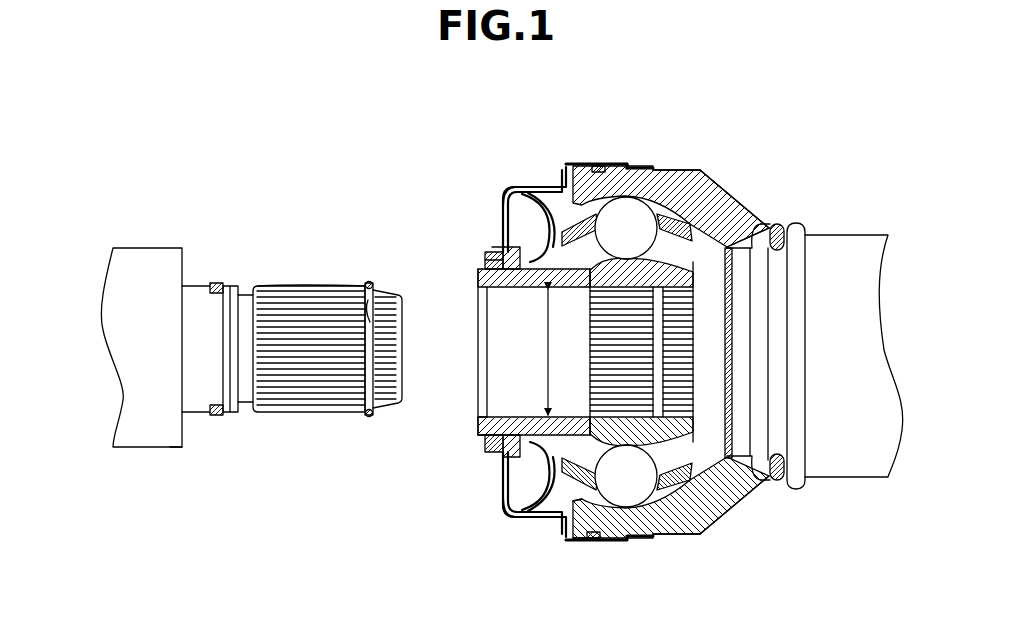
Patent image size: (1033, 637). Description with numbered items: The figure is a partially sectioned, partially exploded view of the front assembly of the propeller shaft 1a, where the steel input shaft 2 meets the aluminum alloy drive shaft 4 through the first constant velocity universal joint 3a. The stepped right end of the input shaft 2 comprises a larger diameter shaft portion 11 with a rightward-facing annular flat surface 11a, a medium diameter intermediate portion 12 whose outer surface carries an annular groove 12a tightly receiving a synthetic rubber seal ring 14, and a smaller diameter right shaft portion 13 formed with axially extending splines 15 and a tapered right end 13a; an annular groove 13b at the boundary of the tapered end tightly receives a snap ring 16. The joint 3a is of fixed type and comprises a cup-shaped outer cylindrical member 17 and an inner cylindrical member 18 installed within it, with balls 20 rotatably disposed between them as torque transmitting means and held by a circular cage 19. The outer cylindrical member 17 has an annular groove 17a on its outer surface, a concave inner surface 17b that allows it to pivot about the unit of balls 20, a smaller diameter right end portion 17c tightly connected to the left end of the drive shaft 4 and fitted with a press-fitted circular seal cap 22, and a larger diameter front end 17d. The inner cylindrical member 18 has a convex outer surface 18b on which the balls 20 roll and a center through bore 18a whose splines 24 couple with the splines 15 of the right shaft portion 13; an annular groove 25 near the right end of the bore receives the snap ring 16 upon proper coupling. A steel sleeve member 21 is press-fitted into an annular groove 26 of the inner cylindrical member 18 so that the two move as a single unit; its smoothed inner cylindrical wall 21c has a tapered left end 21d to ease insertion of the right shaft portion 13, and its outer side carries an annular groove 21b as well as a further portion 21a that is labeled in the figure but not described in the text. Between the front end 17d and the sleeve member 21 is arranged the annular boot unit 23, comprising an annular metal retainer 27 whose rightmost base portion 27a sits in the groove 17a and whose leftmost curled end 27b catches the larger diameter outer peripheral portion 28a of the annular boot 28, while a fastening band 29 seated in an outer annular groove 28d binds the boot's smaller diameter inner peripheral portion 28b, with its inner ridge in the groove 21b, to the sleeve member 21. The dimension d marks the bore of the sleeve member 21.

The propeller shaft 1a is at (772, 134).
The input shaft 2 is at (112, 330).
The first constant velocity universal joint 3a is at (700, 170).
The drive shaft 4 is at (851, 458).
The larger diameter shaft portion 11 is at (152, 258).
The annular flat surface 11a is at (183, 441).
The medium diameter intermediate portion 12 is at (193, 414).
The annular groove 12a is at (221, 350).
The smaller diameter right shaft portion 13 is at (272, 377).
The tapered right end 13a is at (393, 342).
The annular groove 13b is at (372, 316).
The seal ring 14 is at (216, 283).
The splines 15 is at (322, 414).
The snap ring 16 is at (367, 284).
The outer cylindrical member 17 is at (705, 182).
The annular groove 17a is at (651, 167).
The inner surface 17b is at (628, 520).
The smaller diameter right end portion 17c is at (752, 487).
The larger diameter front end 17d is at (572, 543).
The inner cylindrical member 18 is at (712, 478).
The center through bore 18a is at (605, 541).
The convex outer surface 18b is at (780, 228).
The circular cage 19 is at (738, 205).
The balls 20 is at (622, 200).
The sleeve member 21 is at (557, 437).
The flange portion of inner joint member 21a is at (510, 248).
The annular groove 21b is at (497, 455).
The smoothed inner cylindrical wall 21c is at (500, 266).
The left end 21d is at (478, 420).
The circular seal cap 22 is at (733, 303).
The annular boot unit 23 is at (497, 527).
The splines 24 is at (620, 200).
The annular groove 25 is at (700, 468).
The annular groove 26 is at (565, 515).
The annular metal retainer 27 is at (575, 164).
The rightmost base portion 27a is at (647, 166).
The leftmost curled end 27b is at (512, 192).
The annular boot 28 is at (548, 190).
The larger diameter outer peripheral portion 28a is at (519, 188).
The smaller diameter inner peripheral portion 28b is at (485, 262).
The outer annular groove 28d is at (503, 500).
The fastening band 29 is at (492, 252).
The bore diameter d is at (550, 352).